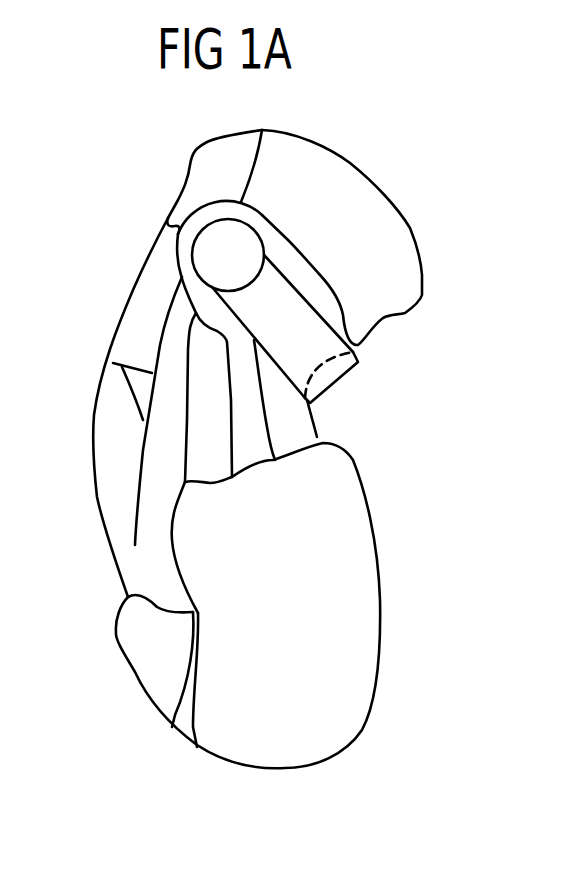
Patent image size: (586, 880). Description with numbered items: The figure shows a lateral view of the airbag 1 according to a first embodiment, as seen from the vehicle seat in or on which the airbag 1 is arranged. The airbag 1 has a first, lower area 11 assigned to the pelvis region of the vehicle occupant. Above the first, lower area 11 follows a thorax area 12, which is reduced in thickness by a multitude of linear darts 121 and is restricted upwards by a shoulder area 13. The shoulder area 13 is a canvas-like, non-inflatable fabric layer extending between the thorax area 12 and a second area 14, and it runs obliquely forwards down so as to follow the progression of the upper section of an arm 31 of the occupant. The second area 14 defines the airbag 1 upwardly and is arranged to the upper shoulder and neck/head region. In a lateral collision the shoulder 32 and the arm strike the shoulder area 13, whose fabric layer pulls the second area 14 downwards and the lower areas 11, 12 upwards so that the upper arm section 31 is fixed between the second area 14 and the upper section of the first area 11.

The airbag 1 is at (405, 192).
The first, lower area 11 is at (350, 693).
The thorax area 12 is at (298, 428).
The linear darts 121 is at (185, 440).
The shoulder area 13 is at (357, 348).
The second area 14 is at (403, 245).
The upper section of an arm 31 is at (285, 303).
The shoulder 32 is at (213, 247).